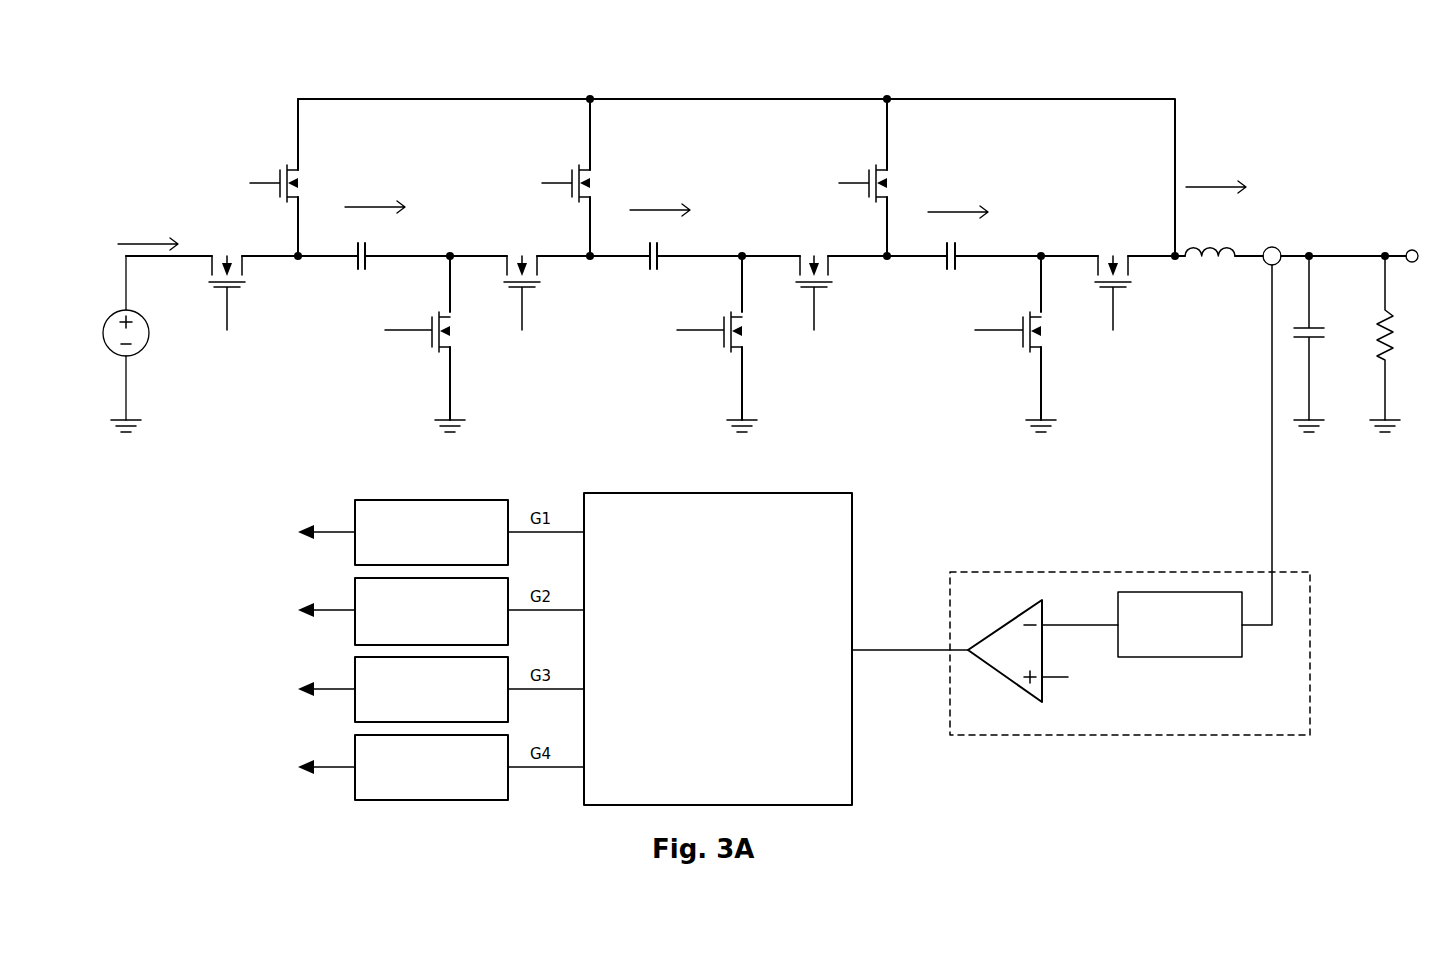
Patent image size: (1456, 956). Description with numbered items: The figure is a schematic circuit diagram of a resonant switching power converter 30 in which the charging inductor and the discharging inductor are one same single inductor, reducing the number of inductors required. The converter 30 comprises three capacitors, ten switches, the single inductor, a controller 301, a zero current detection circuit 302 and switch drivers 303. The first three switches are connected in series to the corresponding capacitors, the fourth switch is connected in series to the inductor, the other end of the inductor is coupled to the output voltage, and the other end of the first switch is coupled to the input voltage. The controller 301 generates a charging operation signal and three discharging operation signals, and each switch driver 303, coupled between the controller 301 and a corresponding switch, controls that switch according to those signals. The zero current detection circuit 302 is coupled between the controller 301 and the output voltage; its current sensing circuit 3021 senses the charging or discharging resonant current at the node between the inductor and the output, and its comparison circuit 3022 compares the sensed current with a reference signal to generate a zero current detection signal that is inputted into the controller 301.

The resonant switching power converter 30 is at (1313, 62).
The controller 301 is at (737, 687).
The zero current detection circuit 302 is at (1292, 713).
The switch drivers 303 is at (442, 788).
The current sensing circuit 3021 is at (1130, 592).
The comparison circuit 3022 is at (978, 642).